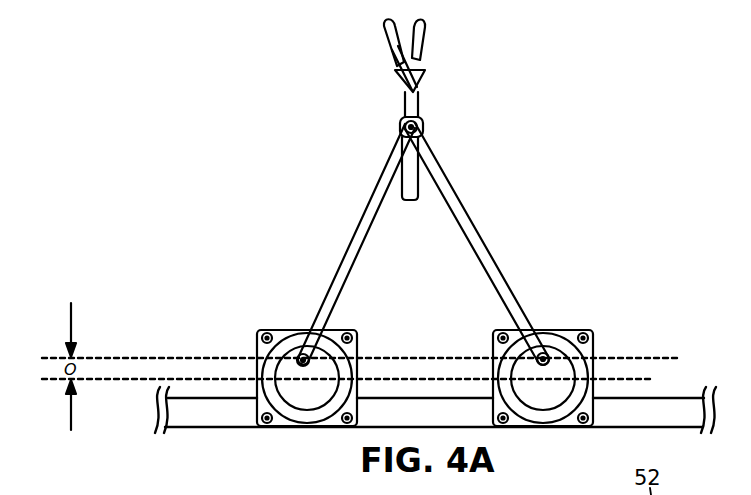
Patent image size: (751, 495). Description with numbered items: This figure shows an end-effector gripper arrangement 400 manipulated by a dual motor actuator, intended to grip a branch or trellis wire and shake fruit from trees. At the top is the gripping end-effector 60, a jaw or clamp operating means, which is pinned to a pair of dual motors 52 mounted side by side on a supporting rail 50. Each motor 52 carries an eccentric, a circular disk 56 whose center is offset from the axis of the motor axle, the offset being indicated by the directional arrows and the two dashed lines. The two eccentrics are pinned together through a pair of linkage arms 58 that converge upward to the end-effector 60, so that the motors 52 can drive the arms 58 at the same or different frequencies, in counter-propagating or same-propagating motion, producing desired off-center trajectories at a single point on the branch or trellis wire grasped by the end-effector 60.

The end-effector gripper arrangement 400 is at (286, 109).
The rail 50 is at (432, 421).
The dual motors 52 is at (290, 328).
The circular disk 56 is at (517, 377).
The linkage arms 58 is at (355, 262).
The end-effector 60 is at (373, 22).